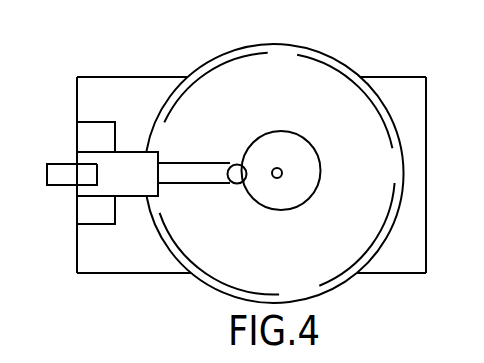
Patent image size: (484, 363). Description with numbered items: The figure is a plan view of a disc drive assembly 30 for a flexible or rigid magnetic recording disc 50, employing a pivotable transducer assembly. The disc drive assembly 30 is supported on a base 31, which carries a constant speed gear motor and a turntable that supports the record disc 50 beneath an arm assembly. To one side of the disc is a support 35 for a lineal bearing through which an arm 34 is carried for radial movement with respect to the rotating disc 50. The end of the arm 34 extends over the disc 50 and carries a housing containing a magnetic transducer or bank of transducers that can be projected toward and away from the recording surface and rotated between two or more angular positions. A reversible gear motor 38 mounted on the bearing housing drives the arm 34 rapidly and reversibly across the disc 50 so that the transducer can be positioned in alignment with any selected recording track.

The disc drive assembly 30 is at (73, 75).
The base 31 is at (427, 77).
The arm 34 is at (70, 185).
The support 35 is at (88, 215).
The reversible gear motor 38 is at (82, 167).
The magnetic recording disc 50 is at (291, 47).